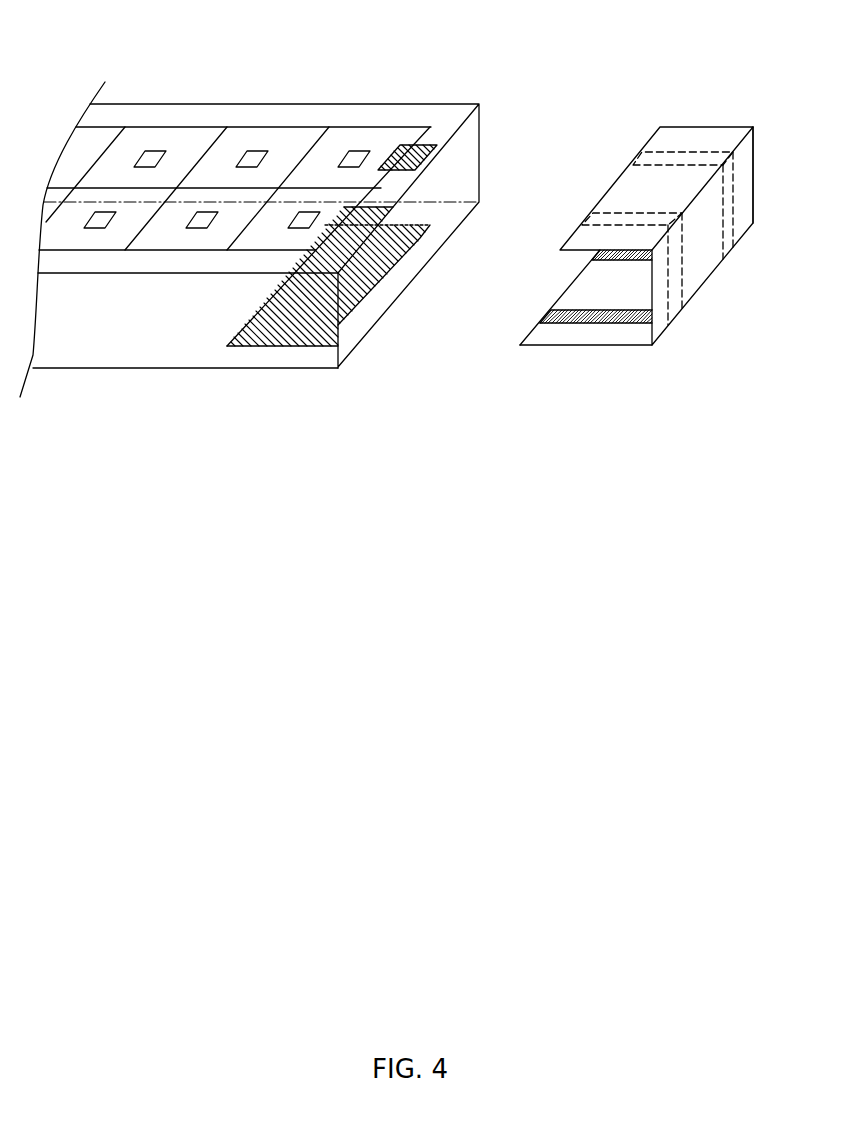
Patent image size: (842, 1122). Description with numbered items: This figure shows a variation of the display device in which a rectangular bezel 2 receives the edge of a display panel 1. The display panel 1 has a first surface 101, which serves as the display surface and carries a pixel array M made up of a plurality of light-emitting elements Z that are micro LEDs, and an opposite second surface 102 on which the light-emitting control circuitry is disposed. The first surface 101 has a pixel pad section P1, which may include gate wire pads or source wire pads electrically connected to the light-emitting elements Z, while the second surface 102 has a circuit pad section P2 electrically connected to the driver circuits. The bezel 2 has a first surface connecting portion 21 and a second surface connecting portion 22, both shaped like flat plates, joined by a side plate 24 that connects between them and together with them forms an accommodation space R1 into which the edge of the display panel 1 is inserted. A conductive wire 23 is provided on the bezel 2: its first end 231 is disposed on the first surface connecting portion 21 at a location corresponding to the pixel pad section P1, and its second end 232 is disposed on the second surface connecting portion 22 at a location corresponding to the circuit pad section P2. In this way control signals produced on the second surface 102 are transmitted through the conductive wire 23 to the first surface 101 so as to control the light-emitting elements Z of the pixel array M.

The display panel 1 is at (163, 84).
The first surface 101 is at (313, 118).
The second surface 102 is at (182, 369).
The pixel array M is at (253, 127).
The light-emitting elements Z is at (265, 154).
The pixel pad section P1 is at (437, 146).
The circuit pad section P2 is at (301, 348).
The bezel 2 is at (653, 138).
The first surface connecting portion 21 is at (708, 135).
The second surface connecting portion 22 is at (553, 335).
The conductive wire 23 is at (673, 278).
The first end 231 is at (633, 222).
The second end 232 is at (603, 323).
The side plate 24 is at (753, 180).
The accommodation space R1 is at (551, 279).